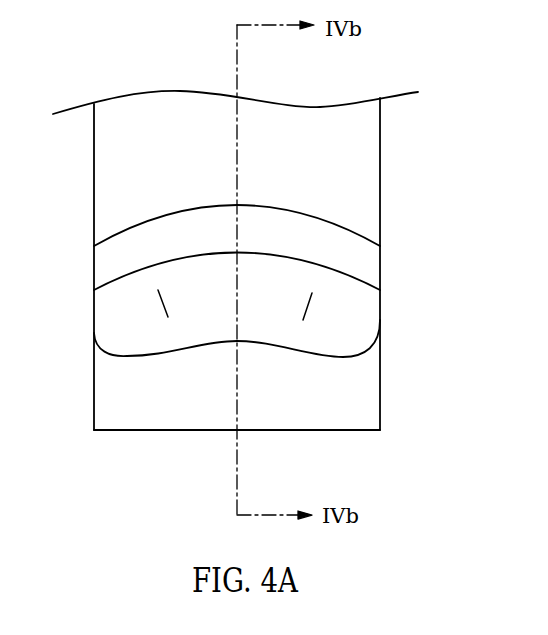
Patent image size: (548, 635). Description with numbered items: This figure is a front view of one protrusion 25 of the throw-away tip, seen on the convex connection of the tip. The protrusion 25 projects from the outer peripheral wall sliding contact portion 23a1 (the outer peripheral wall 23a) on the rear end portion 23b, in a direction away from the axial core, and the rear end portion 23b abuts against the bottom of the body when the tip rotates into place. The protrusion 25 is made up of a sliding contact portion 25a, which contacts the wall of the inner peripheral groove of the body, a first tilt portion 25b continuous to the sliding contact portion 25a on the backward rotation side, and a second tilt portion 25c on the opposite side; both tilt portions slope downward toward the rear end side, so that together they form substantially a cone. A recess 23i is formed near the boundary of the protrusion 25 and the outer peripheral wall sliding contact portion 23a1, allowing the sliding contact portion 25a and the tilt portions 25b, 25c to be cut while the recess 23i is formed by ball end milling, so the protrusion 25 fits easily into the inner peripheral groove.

The outer peripheral wall sliding contact portion 23a is at (275, 260).
The outer peripheral wall sliding contact portion 23a1 is at (375, 138).
The recess 23i is at (369, 262).
The rear end portion 23b is at (165, 432).
The protrusion 25 is at (376, 399).
The sliding contact portion 25a is at (269, 263).
The first tilt portion 25b is at (369, 310).
The second tilt portion 25c is at (108, 313).